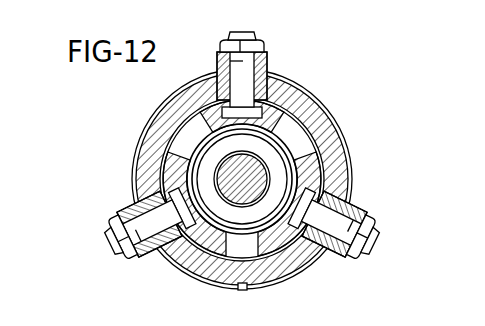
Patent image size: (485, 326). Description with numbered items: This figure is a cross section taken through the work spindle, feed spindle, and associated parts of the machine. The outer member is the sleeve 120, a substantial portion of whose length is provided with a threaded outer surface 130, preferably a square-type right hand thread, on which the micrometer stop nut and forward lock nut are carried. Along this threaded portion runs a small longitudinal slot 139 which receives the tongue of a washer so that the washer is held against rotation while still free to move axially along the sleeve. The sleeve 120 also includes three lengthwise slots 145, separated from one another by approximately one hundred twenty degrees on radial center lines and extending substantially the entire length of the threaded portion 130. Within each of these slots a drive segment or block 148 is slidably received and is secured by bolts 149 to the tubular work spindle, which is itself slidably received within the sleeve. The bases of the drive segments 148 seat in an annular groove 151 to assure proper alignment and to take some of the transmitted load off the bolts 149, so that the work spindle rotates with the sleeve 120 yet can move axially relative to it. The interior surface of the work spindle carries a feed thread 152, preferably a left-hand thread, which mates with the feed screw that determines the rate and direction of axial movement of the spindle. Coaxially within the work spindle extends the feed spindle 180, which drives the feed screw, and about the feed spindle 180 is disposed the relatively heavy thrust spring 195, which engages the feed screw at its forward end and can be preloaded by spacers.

The sleeve 120 is at (102, 152).
The threaded outer surface 130 is at (135, 184).
The longitudinal slot 139 is at (246, 283).
The lengthwise slots 145 is at (289, 80).
The drive segment 148 is at (216, 57).
The bolts 149 is at (244, 71).
The annular groove 151 is at (317, 158).
The feed thread 152 is at (192, 145).
The feed spindle 180 is at (232, 157).
The thrust spring 195 is at (276, 157).